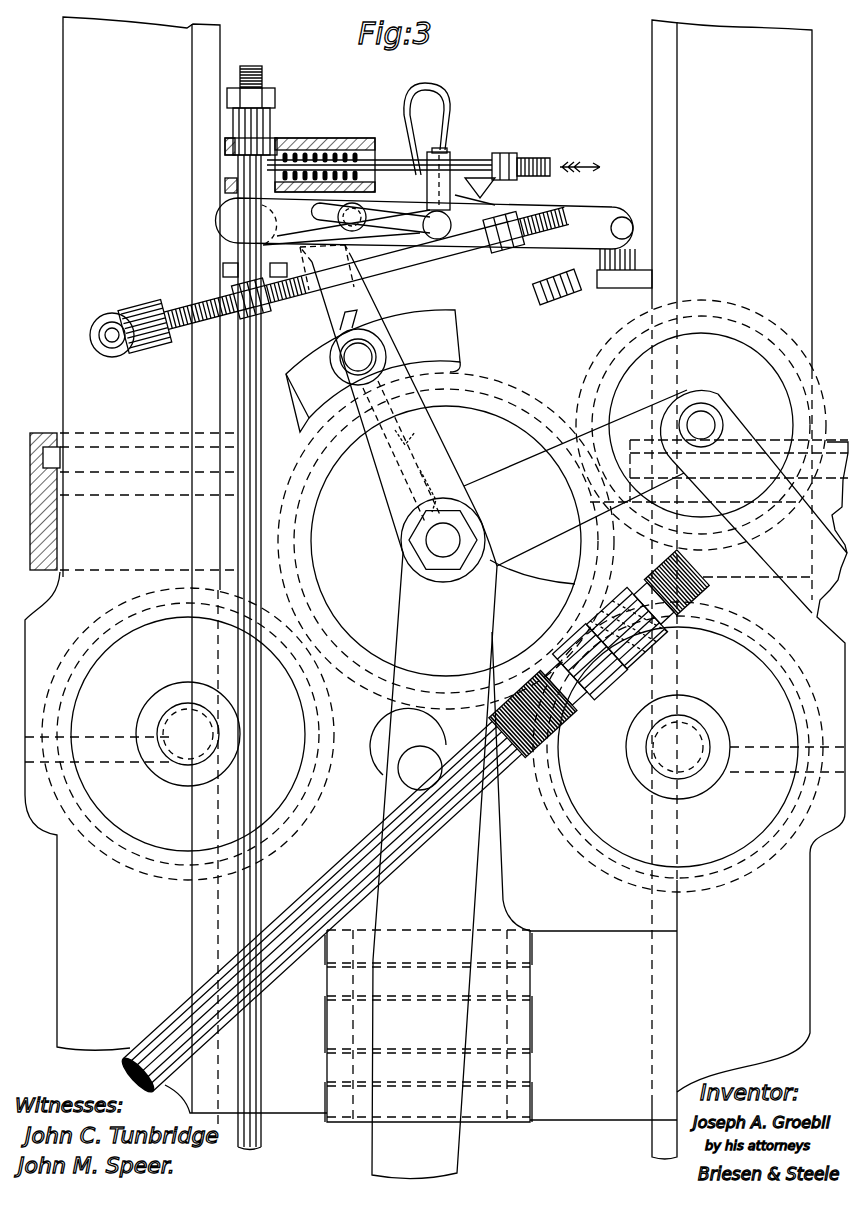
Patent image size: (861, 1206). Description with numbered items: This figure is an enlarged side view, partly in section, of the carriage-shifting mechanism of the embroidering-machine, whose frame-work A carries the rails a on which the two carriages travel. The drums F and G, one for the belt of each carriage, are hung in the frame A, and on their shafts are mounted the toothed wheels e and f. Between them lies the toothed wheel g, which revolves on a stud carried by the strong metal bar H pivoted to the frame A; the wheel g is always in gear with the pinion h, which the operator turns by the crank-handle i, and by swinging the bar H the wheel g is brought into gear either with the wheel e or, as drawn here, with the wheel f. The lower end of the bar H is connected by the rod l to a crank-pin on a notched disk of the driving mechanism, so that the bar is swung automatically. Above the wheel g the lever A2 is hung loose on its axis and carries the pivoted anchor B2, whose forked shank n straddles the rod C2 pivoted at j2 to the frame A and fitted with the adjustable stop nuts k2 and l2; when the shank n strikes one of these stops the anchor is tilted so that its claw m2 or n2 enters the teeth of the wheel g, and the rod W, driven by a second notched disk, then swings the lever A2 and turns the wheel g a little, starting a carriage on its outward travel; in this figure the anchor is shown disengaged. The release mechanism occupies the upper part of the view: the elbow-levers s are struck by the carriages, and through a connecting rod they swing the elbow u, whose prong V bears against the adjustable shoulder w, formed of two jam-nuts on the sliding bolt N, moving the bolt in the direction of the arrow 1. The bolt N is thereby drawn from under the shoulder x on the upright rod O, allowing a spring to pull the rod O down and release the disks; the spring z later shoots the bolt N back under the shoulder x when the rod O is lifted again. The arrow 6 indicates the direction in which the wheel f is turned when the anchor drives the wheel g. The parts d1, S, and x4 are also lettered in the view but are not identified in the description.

The frame-work A is at (437, 588).
The rails a is at (436, 770).
The lever A2 is at (437, 712).
The anchor B2 is at (370, 347).
The rod C2 is at (366, 268).
The slider with loop d1 is at (427, 161).
The toothed wheel e is at (188, 734).
The drum F is at (188, 734).
The toothed wheel f is at (678, 747).
The drum G is at (678, 747).
The toothed wheel g is at (446, 541).
The frame or bar H is at (521, 756).
The pinion h is at (701, 425).
The crank-handle i is at (759, 503).
The pivot j2 is at (125, 312).
The adjustable stop k2 is at (258, 301).
The rod l is at (371, 218).
The adjustable stop l2 is at (504, 243).
The claw m2 is at (385, 364).
The shank n is at (327, 277).
The claw n2 is at (292, 411).
The sliding bolt N is at (379, 156).
The upright rod O is at (251, 608).
The elbow-lever s is at (425, 237).
The bearing block S is at (592, 268).
The elbow u is at (481, 200).
The prong V is at (480, 188).
The rod W is at (413, 824).
The adjustable shoulder w is at (460, 464).
The shoulder x is at (251, 165).
The slot pin x4 is at (405, 444).
The arrow 6 is at (430, 485).
The spring z is at (333, 136).
The arrow 1 is at (592, 169).